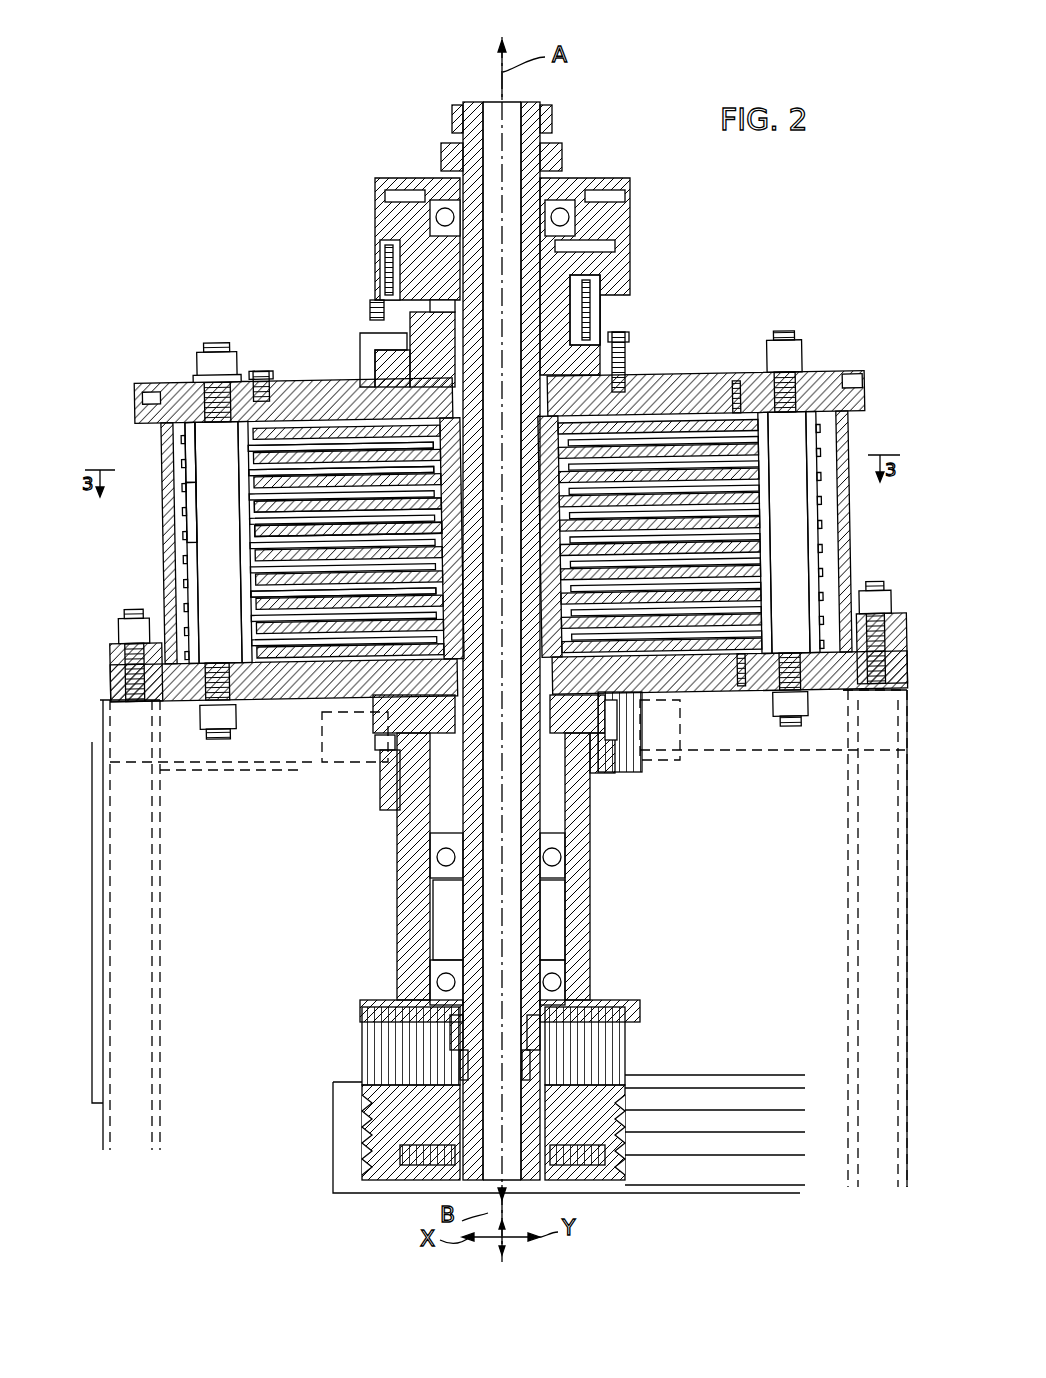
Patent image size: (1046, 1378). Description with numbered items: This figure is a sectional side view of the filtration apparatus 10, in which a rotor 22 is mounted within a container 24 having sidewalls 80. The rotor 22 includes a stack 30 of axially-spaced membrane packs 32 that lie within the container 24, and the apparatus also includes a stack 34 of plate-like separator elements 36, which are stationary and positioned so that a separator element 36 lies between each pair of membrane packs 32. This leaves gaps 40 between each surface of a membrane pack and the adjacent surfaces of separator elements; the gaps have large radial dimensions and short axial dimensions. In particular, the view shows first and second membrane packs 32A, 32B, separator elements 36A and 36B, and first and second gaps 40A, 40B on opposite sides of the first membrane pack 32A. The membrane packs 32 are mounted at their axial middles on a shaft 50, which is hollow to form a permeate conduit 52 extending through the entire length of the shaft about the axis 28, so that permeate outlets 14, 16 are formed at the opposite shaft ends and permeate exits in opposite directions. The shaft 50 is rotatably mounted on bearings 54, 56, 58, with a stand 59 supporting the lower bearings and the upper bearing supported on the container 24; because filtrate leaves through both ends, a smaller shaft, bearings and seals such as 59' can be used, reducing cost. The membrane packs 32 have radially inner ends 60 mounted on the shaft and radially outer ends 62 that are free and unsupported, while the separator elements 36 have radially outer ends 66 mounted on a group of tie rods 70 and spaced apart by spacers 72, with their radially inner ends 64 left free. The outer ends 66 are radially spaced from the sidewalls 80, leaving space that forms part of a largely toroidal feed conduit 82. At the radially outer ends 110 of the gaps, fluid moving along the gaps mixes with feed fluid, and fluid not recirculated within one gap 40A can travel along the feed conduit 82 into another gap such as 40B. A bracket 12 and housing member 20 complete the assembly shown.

The tensioning device 10 is at (290, 186).
The bracket 12 is at (380, 340).
The permeate outlet 14 is at (520, 102).
The permeate outlet 16 is at (530, 1180).
The housing member 20 is at (642, 772).
The rotor 22 is at (638, 382).
The container 24 is at (160, 442).
The axis 28 is at (510, 126).
The stack of membrane packs 30 is at (770, 420).
The membrane packs 32 is at (770, 524).
The first membrane pack 32A is at (243, 513).
The second membrane pack 32B is at (243, 530).
The stack of separator elements 34 is at (820, 432).
The separator elements 36 is at (810, 506).
The separator element 36A is at (188, 463).
The separator element 36B is at (188, 497).
The gaps 40 is at (770, 562).
The first gap 40A is at (283, 470).
The second gap 40B is at (307, 480).
The shaft 50 is at (427, 900).
The permeate conduit 52 is at (450, 932).
The bearing 54 is at (590, 215).
The bearing 56 is at (573, 867).
The bearing 58 is at (560, 965).
The stand 59 is at (221, 925).
The seal 59' is at (629, 310).
The radially inner ends of membrane packs 60 is at (643, 692).
The radially outer ends of membrane packs 62 is at (723, 692).
The radially inner ends of separator elements 64 is at (370, 695).
The radially outer ends of separator elements 66 is at (248, 700).
The tie rods 70 is at (220, 347).
The spacers 72 is at (123, 660).
The sidewalls 80 is at (155, 407).
The feed conduit 82 is at (263, 367).
The radially outer ends of the gaps 110 is at (240, 608).